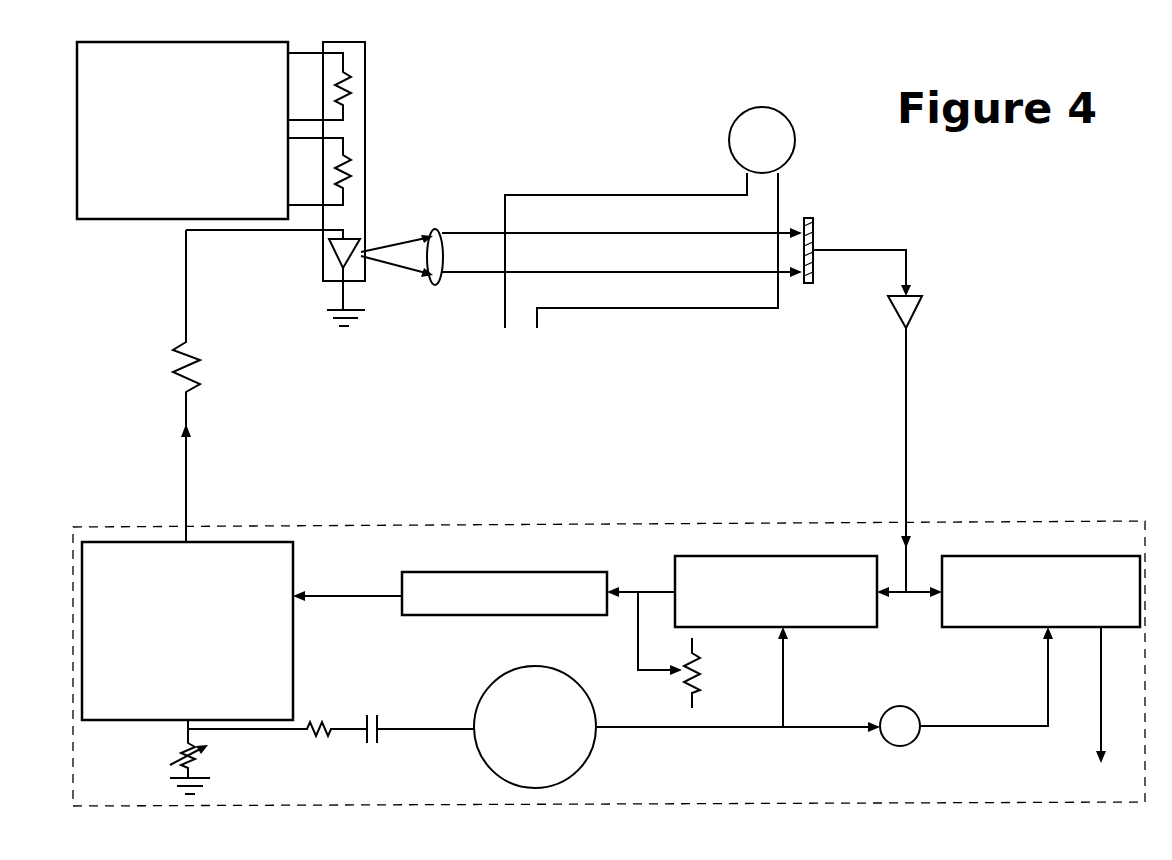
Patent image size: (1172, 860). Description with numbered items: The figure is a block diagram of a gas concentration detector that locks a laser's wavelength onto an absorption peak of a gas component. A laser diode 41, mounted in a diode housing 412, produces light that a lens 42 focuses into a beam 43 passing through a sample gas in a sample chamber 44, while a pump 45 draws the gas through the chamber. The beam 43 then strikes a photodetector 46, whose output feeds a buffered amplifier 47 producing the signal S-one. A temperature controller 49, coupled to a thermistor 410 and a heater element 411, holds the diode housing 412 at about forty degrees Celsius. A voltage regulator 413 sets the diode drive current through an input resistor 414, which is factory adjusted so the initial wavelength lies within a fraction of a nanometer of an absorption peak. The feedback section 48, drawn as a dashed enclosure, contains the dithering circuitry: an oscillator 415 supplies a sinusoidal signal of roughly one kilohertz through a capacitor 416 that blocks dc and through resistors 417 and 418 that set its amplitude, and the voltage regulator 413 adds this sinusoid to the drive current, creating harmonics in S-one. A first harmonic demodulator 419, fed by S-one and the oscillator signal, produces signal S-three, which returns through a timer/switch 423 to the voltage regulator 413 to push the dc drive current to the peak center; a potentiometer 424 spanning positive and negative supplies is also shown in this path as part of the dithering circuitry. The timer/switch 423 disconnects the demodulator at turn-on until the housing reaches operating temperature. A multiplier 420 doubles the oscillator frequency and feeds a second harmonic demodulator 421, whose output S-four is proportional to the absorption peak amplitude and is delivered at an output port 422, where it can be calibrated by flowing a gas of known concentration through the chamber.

The temperature controller 49 is at (182, 130).
The thermistor 410 is at (350, 72).
The heater element 411 is at (350, 163).
The diode housing 412 is at (357, 198).
The laser diode 41 is at (347, 247).
The lens 42 is at (425, 278).
The beam 43 is at (488, 232).
The sample chamber 44 is at (638, 190).
The pump 45 is at (762, 140).
The photodetector 46 is at (813, 233).
The buffered amplifier 47 is at (908, 305).
The feedback section 48 is at (1084, 530).
The input resistor 414 is at (190, 350).
The voltage regulator 413 is at (187, 631).
The timer/switch 423 is at (484, 583).
The dithering circuitry element 424 is at (698, 668).
The first harmonic demodulator 419 is at (776, 641).
The second harmonic demodulator 421 is at (1008, 590).
The output port 422 is at (1098, 735).
The multiplier 420 is at (880, 733).
The oscillator 415 is at (535, 727).
The capacitor 416 is at (382, 735).
The resistor 417 is at (318, 738).
The resistor 418 is at (170, 753).